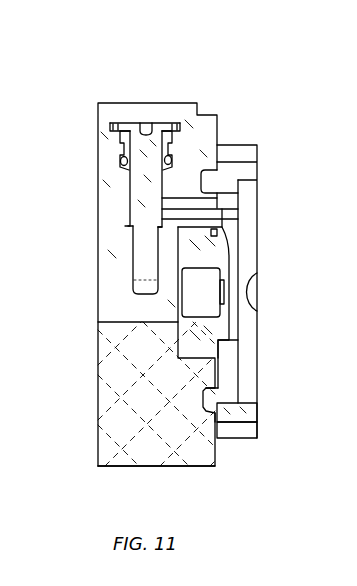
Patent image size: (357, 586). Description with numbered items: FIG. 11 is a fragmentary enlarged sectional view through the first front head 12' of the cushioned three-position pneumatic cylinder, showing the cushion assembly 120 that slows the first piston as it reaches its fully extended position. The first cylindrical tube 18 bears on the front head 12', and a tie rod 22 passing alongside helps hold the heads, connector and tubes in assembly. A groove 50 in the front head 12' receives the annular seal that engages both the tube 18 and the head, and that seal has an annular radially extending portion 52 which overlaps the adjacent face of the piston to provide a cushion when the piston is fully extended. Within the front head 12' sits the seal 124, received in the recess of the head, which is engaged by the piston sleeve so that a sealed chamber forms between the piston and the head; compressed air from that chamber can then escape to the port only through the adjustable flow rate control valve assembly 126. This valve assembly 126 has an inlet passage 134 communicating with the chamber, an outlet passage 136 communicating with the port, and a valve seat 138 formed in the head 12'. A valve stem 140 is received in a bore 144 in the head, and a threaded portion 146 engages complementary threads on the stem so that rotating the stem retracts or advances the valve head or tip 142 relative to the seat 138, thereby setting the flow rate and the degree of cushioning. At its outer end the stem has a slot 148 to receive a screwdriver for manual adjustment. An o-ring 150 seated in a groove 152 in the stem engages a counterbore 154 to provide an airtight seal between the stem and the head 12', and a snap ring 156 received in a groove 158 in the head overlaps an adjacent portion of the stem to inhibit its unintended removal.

The cushion assembly 120 is at (241, 74).
The adjustable flow rate control valve assembly 126 is at (150, 101).
The snap ring 156 is at (118, 123).
The slot 148 is at (141, 122).
The groove 158 is at (176, 122).
The threaded portion 146 is at (128, 183).
The counterbore 154 is at (171, 143).
The groove 152 is at (125, 166).
The o-ring 150 is at (171, 157).
The valve stem 140 is at (210, 193).
The bore 144 is at (129, 213).
The inlet passage 134 is at (214, 220).
The valve seat 138 is at (131, 228).
The valve head or tip 142 is at (147, 229).
The outlet passage 136 is at (147, 263).
The seal 124 is at (227, 257).
The annular radially extending portion 52 is at (240, 368).
The first cylindrical tube 18 is at (248, 413).
The tie rod 22 is at (244, 438).
The groove 50 is at (216, 413).
The first front head 12' is at (178, 484).